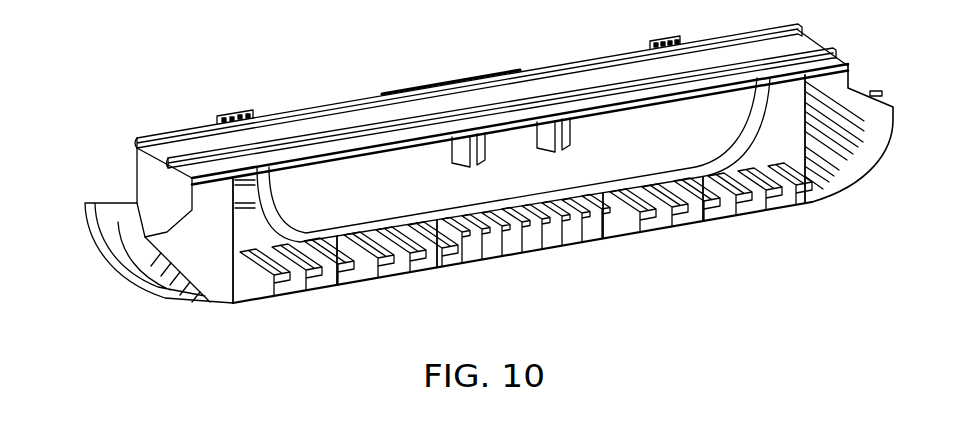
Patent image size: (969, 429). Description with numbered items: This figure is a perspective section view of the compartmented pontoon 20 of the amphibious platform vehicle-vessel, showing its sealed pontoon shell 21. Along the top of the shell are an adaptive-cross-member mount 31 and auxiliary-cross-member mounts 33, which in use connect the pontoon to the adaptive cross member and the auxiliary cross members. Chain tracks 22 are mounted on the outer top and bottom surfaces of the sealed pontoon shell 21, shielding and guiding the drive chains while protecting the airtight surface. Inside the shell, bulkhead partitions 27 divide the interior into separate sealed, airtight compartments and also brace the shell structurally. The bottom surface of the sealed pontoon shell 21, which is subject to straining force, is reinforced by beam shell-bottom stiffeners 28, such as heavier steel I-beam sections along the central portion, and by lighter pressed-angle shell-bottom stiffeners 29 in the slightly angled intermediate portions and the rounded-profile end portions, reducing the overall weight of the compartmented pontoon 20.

The compartmented pontoon 20 is at (116, 56).
The sealed pontoon shell 21 is at (133, 188).
The chain tracks 22 is at (153, 133).
The bulkhead partitions 27 is at (233, 292).
The beam shell-bottom stiffeners 28 is at (525, 250).
The pressed-angle shell-bottom stiffeners 29 is at (377, 268).
The adaptive-cross-member mount 31 is at (427, 88).
The auxiliary-cross-member mounts 33 is at (243, 112).